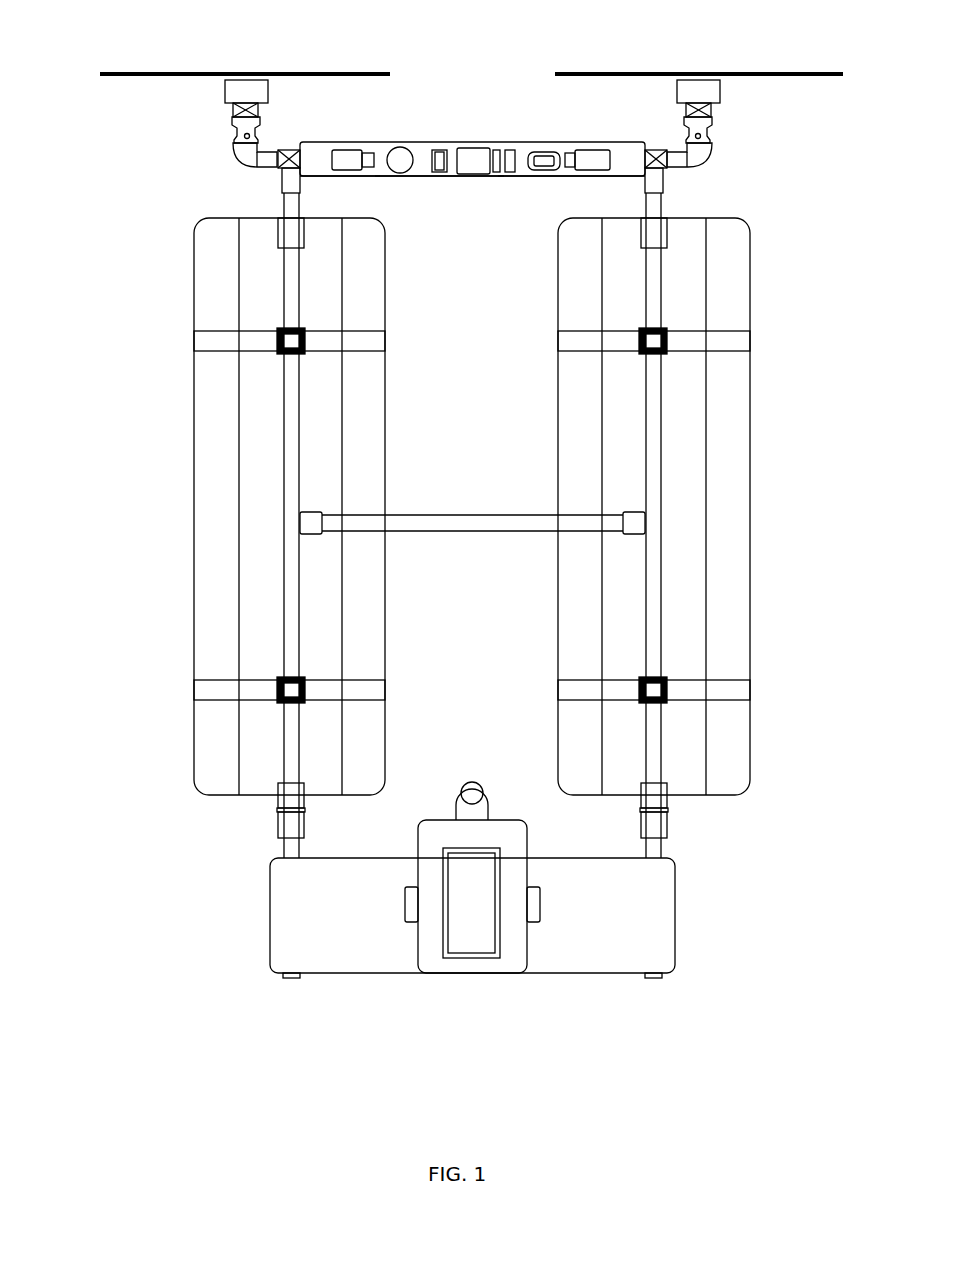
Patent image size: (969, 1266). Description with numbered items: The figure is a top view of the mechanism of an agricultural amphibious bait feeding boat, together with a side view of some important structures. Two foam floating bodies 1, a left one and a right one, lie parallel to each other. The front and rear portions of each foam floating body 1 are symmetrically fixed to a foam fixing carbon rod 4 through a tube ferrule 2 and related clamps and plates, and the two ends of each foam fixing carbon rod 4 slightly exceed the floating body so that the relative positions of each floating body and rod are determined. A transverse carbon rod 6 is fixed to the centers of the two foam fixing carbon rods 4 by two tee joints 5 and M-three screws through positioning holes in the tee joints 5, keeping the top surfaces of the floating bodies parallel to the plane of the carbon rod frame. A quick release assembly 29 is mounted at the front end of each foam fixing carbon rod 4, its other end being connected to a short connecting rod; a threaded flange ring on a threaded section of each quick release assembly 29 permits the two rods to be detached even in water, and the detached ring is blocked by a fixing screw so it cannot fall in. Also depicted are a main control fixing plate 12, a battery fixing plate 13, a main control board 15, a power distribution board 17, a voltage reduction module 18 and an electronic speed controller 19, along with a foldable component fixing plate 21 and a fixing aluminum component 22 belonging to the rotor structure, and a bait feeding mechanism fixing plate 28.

The foam floating body 1 is at (454, 479).
The tube ferrule 2 is at (449, 503).
The foam fixing carbon rod 4 is at (480, 525).
The tee joint 5 is at (547, 275).
The transverse carbon rod 6 is at (472, 549).
The main control fixing plate 12 is at (520, 209).
The battery fixing plate 13 is at (419, 213).
The main control board 15 is at (499, 96).
The power distribution board 17 is at (434, 95).
The voltage reduction module 18 is at (559, 130).
The electronic speed controller 19 is at (492, 94).
The foldable component fixing plate 21 is at (451, 94).
The fixing aluminum component 22 is at (470, 62).
The bait feeding mechanism fixing plate 28 is at (432, 924).
The quick release assembly 29 is at (472, 584).